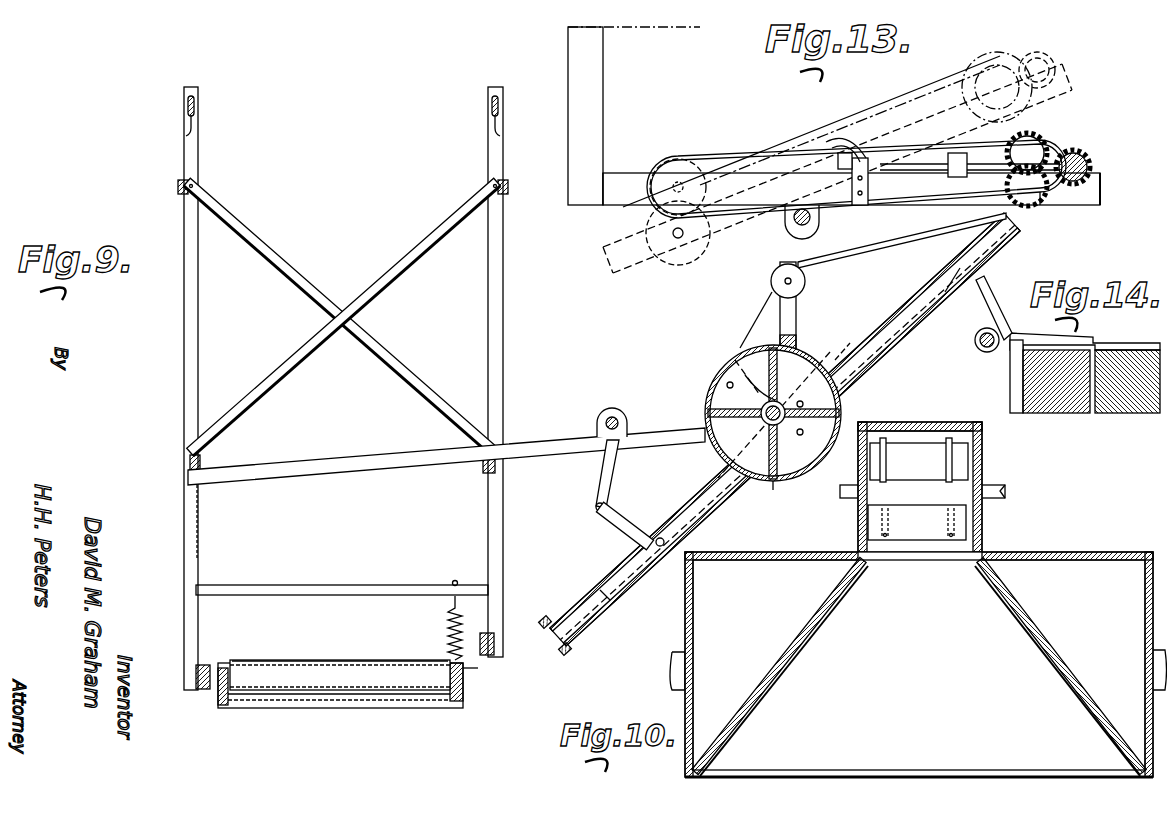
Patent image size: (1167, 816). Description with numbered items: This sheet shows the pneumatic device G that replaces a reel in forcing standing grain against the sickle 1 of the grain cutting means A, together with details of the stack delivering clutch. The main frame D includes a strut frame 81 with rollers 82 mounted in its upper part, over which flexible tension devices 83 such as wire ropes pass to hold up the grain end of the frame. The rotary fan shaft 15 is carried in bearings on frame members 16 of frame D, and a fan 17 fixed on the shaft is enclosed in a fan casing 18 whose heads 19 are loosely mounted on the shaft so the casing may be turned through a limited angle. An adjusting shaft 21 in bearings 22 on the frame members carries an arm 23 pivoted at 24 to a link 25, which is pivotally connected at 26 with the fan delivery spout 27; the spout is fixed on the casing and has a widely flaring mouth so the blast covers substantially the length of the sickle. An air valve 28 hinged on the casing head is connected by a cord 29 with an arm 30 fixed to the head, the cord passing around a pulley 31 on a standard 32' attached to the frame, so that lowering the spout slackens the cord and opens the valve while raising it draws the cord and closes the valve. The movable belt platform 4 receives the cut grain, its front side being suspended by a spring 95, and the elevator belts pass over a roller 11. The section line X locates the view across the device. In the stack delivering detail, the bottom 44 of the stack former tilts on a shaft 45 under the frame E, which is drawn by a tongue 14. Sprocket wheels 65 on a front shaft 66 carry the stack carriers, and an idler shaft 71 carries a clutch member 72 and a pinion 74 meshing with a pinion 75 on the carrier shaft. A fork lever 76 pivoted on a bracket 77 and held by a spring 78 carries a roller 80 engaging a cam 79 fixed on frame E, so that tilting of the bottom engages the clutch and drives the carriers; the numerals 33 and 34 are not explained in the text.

In FIG. 9, the sickle 1 is at (466, 670).
In FIG. 9, the movable belt platform 4 is at (335, 660).
In FIG. 10, the roller 11 is at (779, 389).
In FIG. 13, the tongue 14 is at (972, 140).
In FIG. 10, the rotary fan shaft 15 is at (760, 412).
In FIG. 9, the frame members 16 is at (560, 452).
In FIG. 10, the fan 17 is at (918, 489).
In FIG. 10, the fan casing 18 is at (928, 424).
In FIG. 10, the casing heads 19 is at (982, 436).
In FIG. 10, the adjusting shaft 21 is at (628, 407).
In FIG. 10, the bearings 22 is at (600, 420).
In FIG. 10, the arm 23 is at (612, 486).
In FIG. 10, the pivot 24 is at (594, 508).
In FIG. 10, the link 25 is at (618, 530).
In FIG. 10, the pivotal connection 26 is at (663, 538).
In FIG. 10, the fan delivery spout 27 is at (607, 606).
In FIG. 10, the air valve 28 is at (748, 378).
In FIG. 10, the cord 29 is at (848, 252).
In FIG. 10, the arm 30 is at (945, 292).
In FIG. 10, the pulley 31 is at (797, 290).
In FIG. 10, the standard 32' is at (817, 320).
In FIG. 9, the tray 33 is at (340, 675).
In FIG. 9, the tray frame 34 is at (463, 700).
In FIG. 13, the bottom of the stack former 44 is at (660, 262).
In FIG. 14, the bottom of the stack former 44 is at (1130, 414).
In FIG. 13, the shaft 45 is at (792, 228).
In FIG. 13, the sprocket wheels 65 is at (678, 160).
In FIG. 13, the front rotary shaft 66 is at (1040, 210).
In FIG. 13, the idler or pivot shaft 71 is at (1085, 155).
In FIG. 13, the clutch member 72 is at (1090, 175).
In FIG. 13, the pinion 74 is at (1090, 160).
In FIG. 13, the pinion 75 is at (1038, 142).
In FIG. 13, the fork lever 76 is at (915, 180).
In FIG. 14, the fork lever 76 is at (987, 350).
In FIG. 14, the bracket 77 is at (1043, 335).
In FIG. 10, the spring 78 is at (783, 492).
In FIG. 13, the cam 79 is at (842, 140).
In FIG. 14, the cam 79 is at (1000, 300).
In FIG. 13, the roller 80 is at (868, 195).
In FIG. 14, the roller 80 is at (975, 342).
In FIG. 9, the strut frame 81 is at (197, 162).
In FIG. 9, the rollers 82 is at (190, 130).
In FIG. 9, the flexible tension devices 83 is at (194, 103).
In FIG. 9, the spring 95 is at (447, 620).
In FIG. 9, the grain cutting means A is at (422, 640).
In FIG. 9, the main frame D is at (190, 636).
In FIG. 13, the stack former supporting frame E is at (610, 190).
In FIG. 14, the stack former supporting frame E is at (1062, 414).
In FIG. 10, the pneumatic device G is at (848, 442).
In FIG. 10, the section line X is at (866, 337).